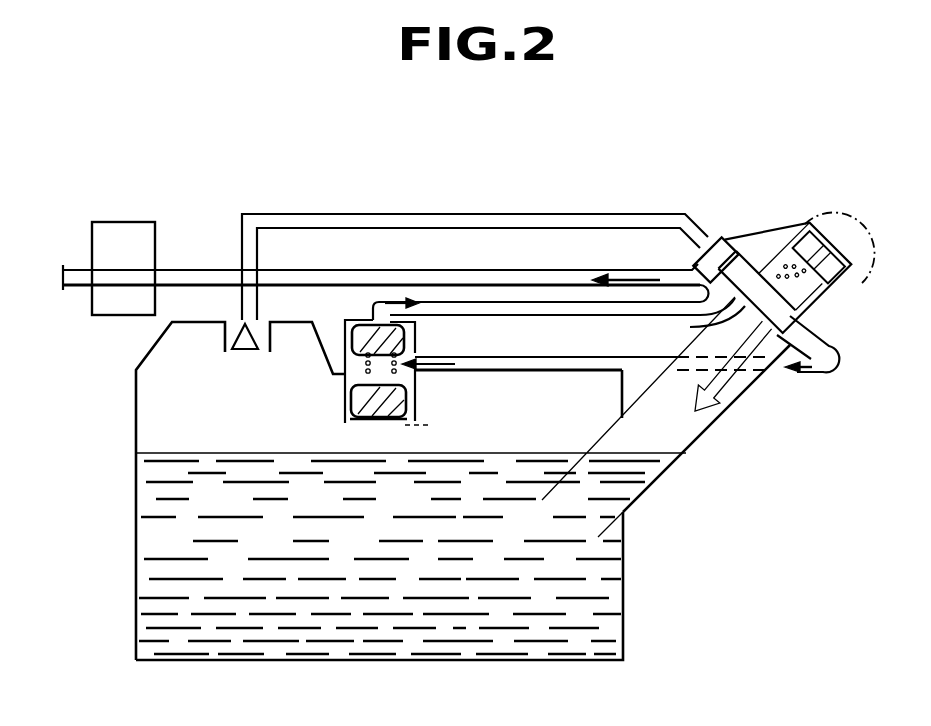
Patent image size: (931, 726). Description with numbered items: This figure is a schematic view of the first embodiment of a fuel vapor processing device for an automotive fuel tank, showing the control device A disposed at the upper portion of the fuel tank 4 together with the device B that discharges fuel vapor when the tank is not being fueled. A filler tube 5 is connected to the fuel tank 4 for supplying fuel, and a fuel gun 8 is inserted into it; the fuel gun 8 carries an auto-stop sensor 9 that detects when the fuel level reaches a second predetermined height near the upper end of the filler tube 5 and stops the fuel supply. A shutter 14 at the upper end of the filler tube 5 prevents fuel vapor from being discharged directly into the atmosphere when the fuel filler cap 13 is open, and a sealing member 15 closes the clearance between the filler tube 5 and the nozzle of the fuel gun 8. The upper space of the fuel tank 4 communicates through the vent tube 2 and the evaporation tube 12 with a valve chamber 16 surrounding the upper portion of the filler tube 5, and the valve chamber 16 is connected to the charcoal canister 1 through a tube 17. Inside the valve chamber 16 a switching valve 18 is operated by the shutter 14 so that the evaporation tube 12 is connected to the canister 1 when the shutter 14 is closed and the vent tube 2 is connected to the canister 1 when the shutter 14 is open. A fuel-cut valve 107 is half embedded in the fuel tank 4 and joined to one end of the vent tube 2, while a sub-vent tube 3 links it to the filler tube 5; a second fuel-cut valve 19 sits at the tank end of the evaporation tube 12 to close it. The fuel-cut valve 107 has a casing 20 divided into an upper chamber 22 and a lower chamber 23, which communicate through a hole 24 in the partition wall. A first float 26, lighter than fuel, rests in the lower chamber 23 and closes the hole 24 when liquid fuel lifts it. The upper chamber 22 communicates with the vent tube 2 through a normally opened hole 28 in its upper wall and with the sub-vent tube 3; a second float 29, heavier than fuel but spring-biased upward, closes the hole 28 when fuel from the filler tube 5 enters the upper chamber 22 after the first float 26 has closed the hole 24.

The charcoal canister 1 is at (122, 222).
The vent tube 2 is at (553, 320).
The sub-vent tube 3 is at (806, 385).
The fuel tank 4 is at (135, 488).
The filler tube 5 is at (714, 425).
The fuel gun 8 is at (812, 248).
The auto-stop sensor 9 is at (800, 370).
The evaporation tube 12 is at (283, 212).
The fuel filler cap 13 is at (836, 218).
The shutter 14 is at (762, 327).
The sealing member 15 is at (830, 352).
The valve chamber 16 is at (718, 240).
The tube 17 is at (585, 272).
The switching valve 18 is at (737, 262).
The second fuel-cut valve 19 is at (222, 333).
The casing 20 is at (353, 400).
The upper chamber 22 is at (363, 318).
The lower chamber 23 is at (417, 386).
The hole 24 is at (372, 380).
The first float 26 is at (417, 413).
The hole 28 is at (374, 312).
The second float 29 is at (345, 322).
The fuel-cut valve 107 is at (421, 324).
The device A is at (493, 296).
The device B is at (252, 213).